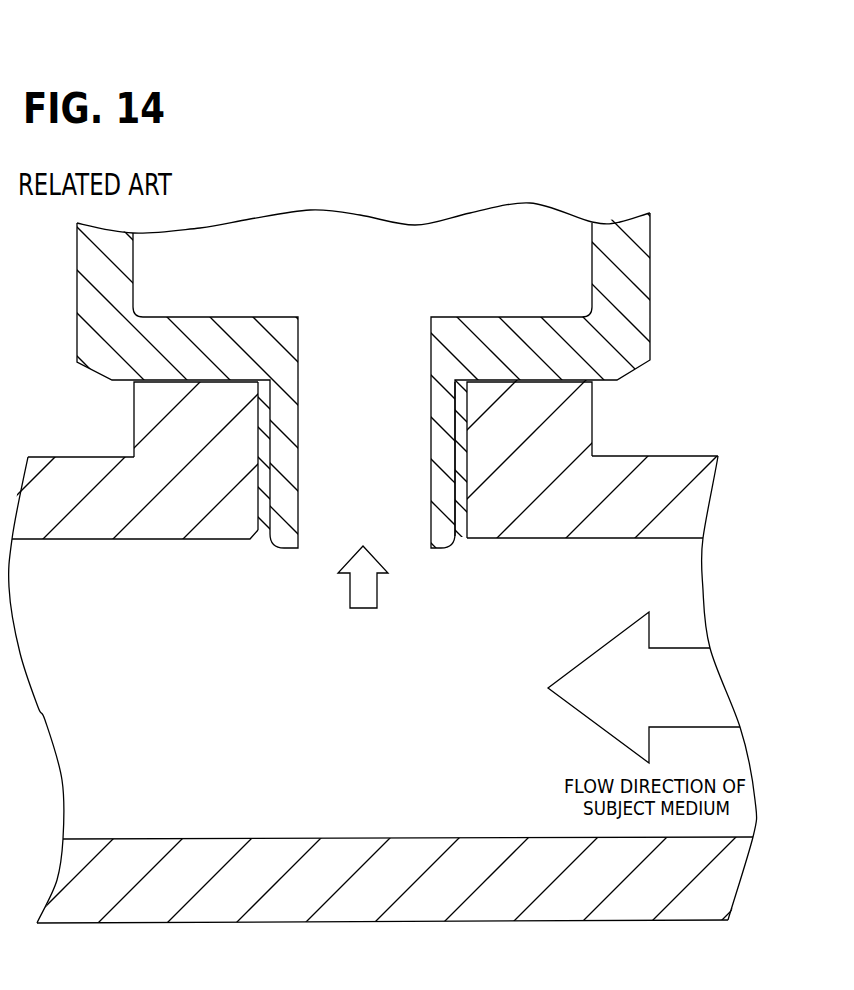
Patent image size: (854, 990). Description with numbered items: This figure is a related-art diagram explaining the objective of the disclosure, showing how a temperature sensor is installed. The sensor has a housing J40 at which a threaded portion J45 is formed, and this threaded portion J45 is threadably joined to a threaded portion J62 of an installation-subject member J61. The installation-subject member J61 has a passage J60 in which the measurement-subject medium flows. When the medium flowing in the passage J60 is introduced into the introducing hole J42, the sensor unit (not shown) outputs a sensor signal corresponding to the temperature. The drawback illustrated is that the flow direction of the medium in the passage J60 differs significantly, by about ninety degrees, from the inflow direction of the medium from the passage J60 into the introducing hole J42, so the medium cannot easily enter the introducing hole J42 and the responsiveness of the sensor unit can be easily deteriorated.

The housing J40 is at (633, 287).
The introducing hole J42 is at (348, 396).
The threaded portion J45 is at (463, 437).
The passage J60 is at (172, 805).
The installation-subject member J61 is at (688, 512).
The threaded portion J62 is at (522, 413).